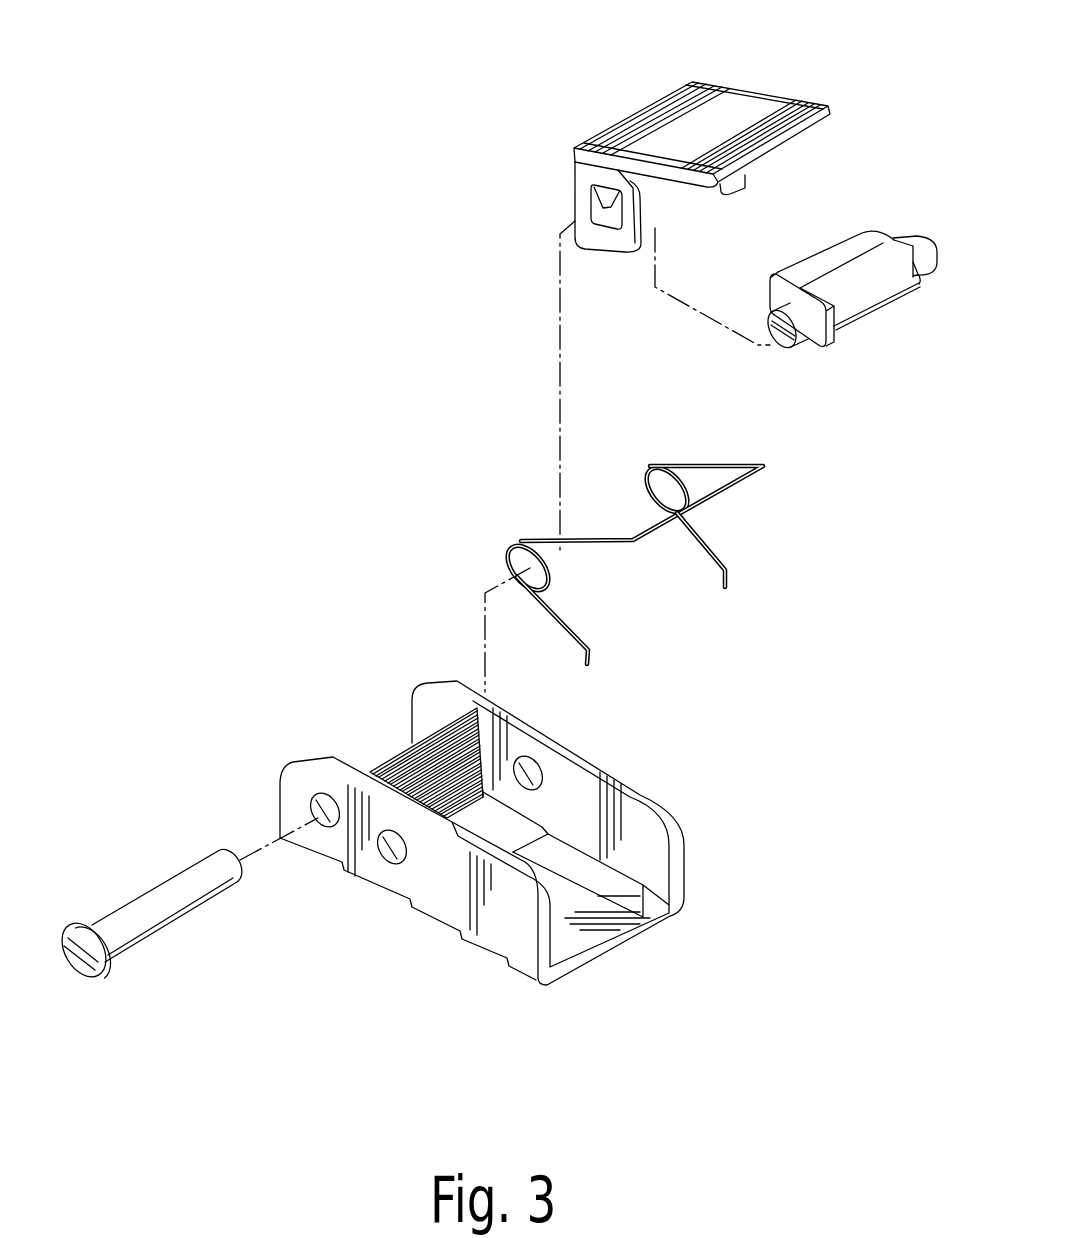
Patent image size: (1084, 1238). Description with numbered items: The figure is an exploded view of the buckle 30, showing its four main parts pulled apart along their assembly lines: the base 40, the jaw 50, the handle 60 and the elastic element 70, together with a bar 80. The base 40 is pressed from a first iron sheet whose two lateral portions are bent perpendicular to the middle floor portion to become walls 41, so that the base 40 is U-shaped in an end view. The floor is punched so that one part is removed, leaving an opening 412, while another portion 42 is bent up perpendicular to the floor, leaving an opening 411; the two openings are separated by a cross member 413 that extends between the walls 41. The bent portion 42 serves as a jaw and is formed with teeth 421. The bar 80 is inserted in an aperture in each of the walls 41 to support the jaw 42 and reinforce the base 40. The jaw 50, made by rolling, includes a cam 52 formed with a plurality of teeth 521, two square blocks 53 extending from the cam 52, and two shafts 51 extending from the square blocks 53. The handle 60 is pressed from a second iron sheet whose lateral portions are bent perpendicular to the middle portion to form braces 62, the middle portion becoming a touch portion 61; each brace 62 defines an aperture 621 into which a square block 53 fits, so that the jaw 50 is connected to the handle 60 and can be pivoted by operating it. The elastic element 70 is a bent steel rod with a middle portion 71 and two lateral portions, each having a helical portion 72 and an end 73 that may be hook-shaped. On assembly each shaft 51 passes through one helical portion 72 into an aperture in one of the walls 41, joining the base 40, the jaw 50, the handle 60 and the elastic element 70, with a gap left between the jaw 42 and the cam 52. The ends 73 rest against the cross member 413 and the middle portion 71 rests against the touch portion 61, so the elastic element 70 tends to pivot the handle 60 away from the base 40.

The buckle 30 is at (342, 996).
The base 40 is at (523, 866).
The walls 41 is at (524, 876).
The opening 411 is at (513, 827).
The opening 412 is at (640, 913).
The cross member 413 is at (543, 857).
The jaw 42 is at (380, 739).
The teeth 421 is at (380, 754).
The jaw 50 is at (835, 296).
The shafts 51 is at (920, 243).
The cam 52 is at (871, 303).
The square blocks 53 is at (820, 345).
The teeth 521 is at (778, 302).
The handle 60 is at (640, 133).
The touch portion 61 is at (757, 133).
The braces 62 is at (546, 196).
The aperture 621 is at (608, 210).
The elastic element 70 is at (600, 562).
The middle portion 71 is at (688, 510).
The helical portion 72 is at (668, 489).
The end 73 is at (729, 582).
The bar 80 is at (135, 912).